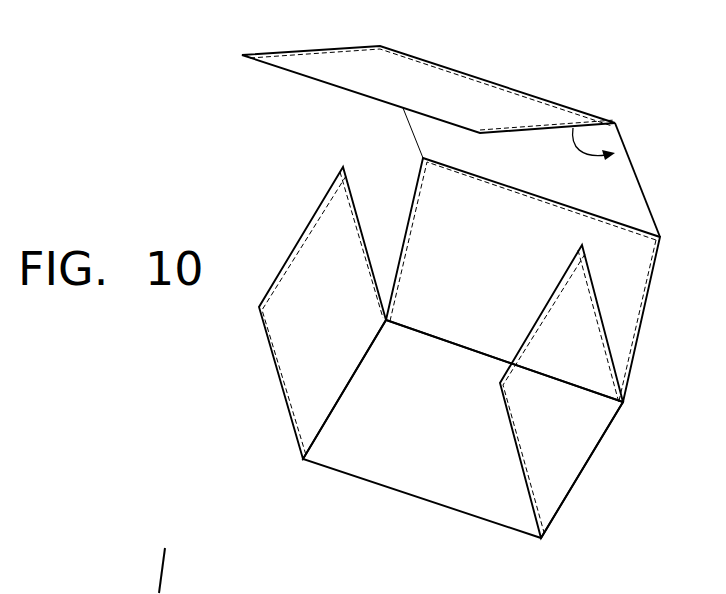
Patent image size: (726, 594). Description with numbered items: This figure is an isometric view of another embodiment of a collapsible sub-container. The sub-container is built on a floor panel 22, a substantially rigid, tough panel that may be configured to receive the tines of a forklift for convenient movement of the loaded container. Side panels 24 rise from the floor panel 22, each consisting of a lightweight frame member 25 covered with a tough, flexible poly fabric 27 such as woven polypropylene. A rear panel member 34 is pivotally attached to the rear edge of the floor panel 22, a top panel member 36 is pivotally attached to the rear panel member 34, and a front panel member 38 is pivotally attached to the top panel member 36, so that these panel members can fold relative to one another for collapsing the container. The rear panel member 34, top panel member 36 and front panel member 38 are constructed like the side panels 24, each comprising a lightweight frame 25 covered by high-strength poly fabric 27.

The floor panel 22 is at (424, 465).
The side panel 24 is at (290, 347).
The frame member 25 is at (292, 257).
The poly fabric 27 is at (323, 58).
The rear panel member 34 is at (463, 257).
The top panel member 36 is at (622, 135).
The front panel member 38 is at (306, 69).